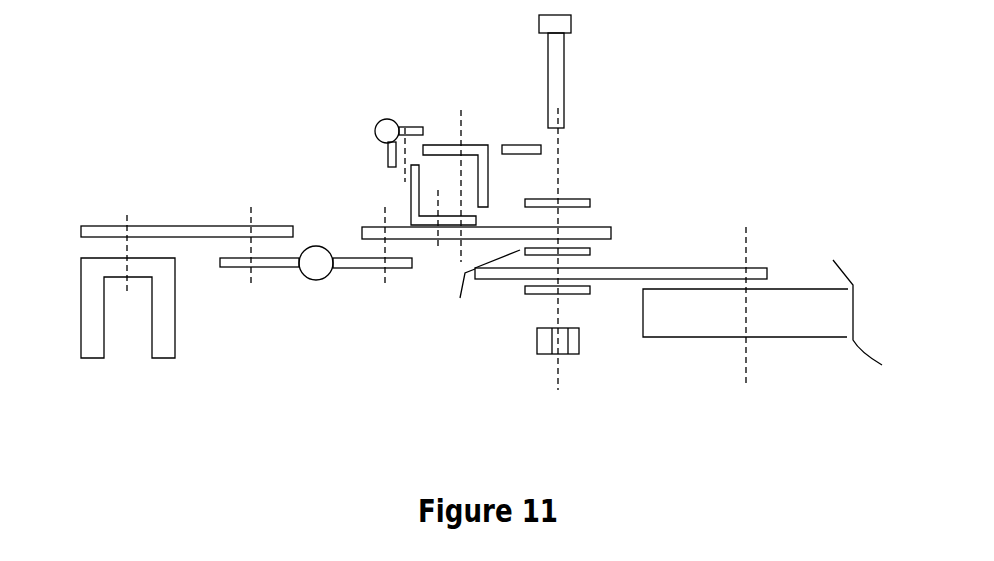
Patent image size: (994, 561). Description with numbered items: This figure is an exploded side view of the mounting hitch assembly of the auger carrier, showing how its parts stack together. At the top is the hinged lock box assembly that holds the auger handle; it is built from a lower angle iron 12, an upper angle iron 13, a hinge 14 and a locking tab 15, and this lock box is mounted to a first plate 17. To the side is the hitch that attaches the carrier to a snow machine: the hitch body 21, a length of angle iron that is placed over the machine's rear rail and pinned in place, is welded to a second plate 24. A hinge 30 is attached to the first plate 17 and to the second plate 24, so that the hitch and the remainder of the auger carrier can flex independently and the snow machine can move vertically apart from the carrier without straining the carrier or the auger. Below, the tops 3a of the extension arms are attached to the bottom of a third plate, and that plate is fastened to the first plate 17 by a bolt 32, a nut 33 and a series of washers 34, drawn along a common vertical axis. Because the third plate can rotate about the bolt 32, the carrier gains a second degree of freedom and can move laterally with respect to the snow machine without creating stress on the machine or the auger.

The tops of the extension arms 3a is at (690, 348).
The lower angle iron 12 is at (407, 193).
The upper angle iron 13 is at (451, 145).
The hinge 14 is at (375, 128).
The locking tab 15 is at (527, 135).
The first plate 17 is at (630, 263).
The hitch body 21 is at (68, 309).
The second plate 24 is at (176, 225).
The hinge 30 is at (315, 282).
The bolt 32 is at (573, 49).
The nut 33 is at (542, 358).
The washers 34 is at (570, 193).